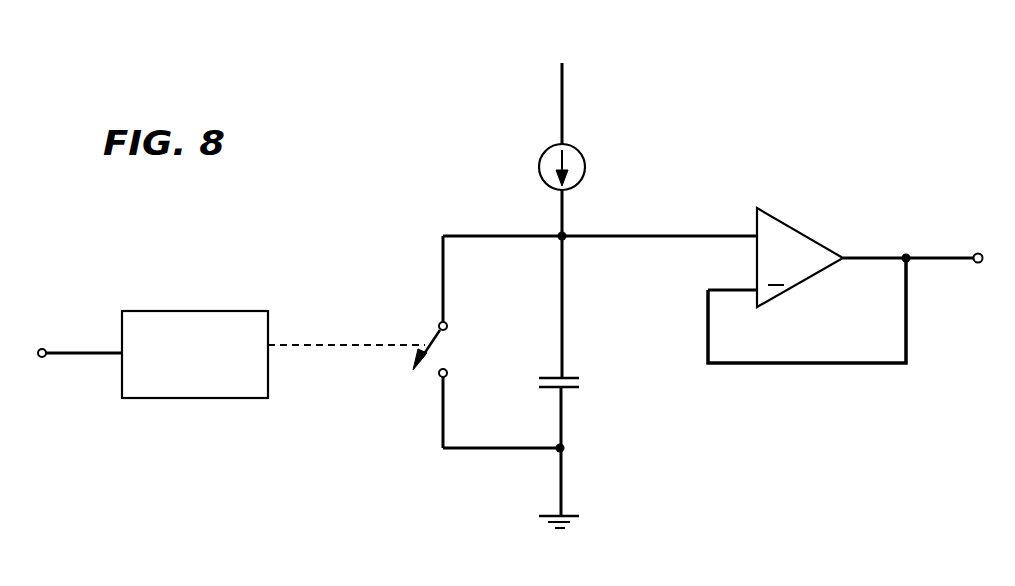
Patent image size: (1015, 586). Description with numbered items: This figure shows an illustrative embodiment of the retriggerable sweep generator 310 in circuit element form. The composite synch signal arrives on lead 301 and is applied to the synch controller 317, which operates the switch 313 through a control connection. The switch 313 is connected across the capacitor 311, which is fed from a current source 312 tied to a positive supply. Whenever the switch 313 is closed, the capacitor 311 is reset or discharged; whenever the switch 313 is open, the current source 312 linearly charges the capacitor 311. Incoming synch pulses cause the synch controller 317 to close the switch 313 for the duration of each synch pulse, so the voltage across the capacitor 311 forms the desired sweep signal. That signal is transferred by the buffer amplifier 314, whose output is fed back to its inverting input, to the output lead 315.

The retriggerable sweep generator 310 is at (376, 159).
The lead 301 is at (82, 352).
The synch controller 317 is at (178, 311).
The switch 313 is at (436, 338).
The current source 312 is at (582, 155).
The capacitor 311 is at (566, 375).
The buffer amplifier 314 is at (798, 228).
The lead 315 is at (930, 257).